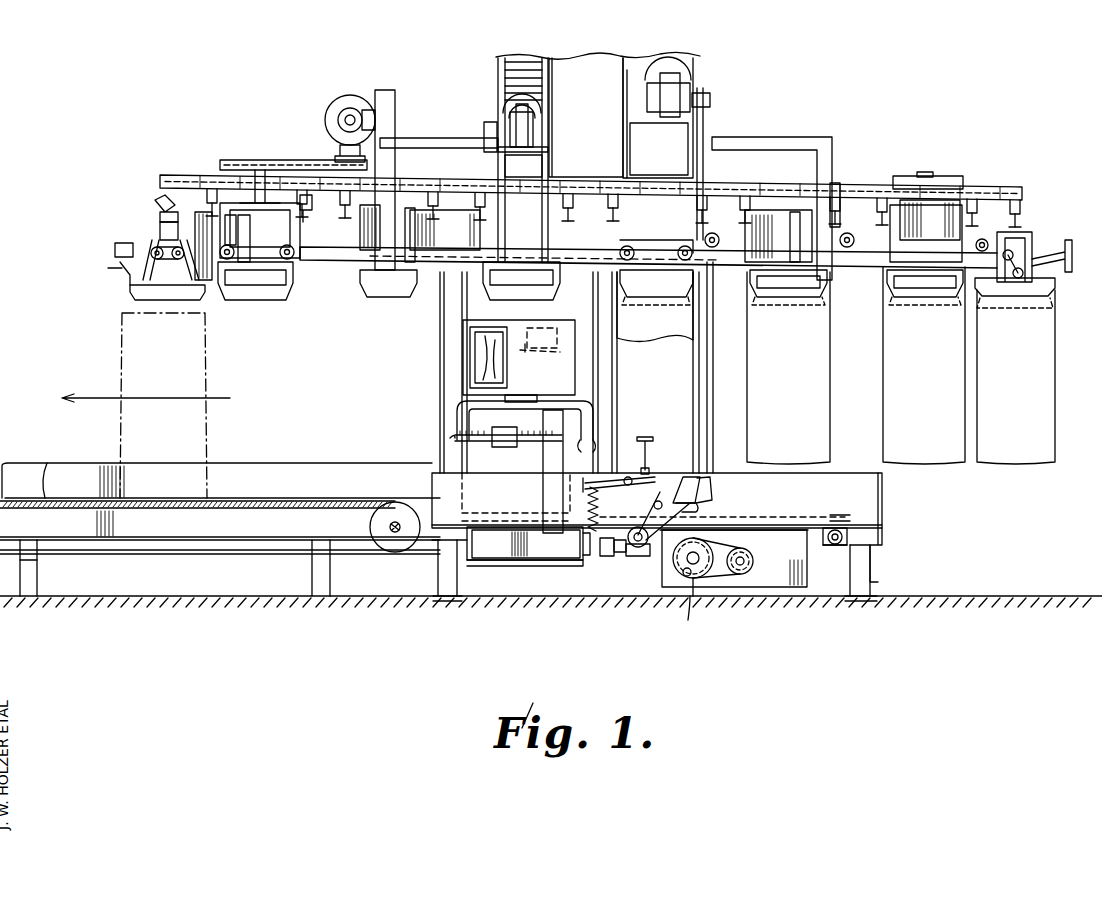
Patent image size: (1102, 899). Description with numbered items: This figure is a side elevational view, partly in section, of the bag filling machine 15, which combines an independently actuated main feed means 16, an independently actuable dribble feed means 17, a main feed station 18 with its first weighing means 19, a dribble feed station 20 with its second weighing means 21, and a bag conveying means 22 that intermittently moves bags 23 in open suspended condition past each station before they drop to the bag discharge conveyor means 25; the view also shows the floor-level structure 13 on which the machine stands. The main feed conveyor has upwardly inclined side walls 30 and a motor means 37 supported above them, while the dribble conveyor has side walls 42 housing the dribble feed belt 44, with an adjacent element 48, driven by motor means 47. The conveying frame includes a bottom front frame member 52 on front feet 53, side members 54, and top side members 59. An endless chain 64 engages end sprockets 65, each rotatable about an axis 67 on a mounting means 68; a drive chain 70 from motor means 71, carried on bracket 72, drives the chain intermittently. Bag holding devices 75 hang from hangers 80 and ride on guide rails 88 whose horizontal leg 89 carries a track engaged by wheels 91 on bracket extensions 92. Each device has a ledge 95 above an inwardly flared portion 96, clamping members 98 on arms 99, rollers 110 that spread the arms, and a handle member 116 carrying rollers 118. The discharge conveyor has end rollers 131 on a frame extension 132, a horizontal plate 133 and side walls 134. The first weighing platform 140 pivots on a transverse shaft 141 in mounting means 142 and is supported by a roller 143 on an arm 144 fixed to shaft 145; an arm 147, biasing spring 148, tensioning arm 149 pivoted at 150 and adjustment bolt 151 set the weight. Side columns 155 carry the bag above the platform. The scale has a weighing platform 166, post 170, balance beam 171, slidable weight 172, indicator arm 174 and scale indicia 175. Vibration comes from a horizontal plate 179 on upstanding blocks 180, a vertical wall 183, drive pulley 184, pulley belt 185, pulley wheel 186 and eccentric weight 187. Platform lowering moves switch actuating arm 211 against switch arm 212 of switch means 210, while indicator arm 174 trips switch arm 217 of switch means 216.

The conveyor 13 is at (150, 555).
The bag filling machine 15 is at (886, 110).
The main feed means 16 is at (701, 74).
The dribble feed means 17 is at (490, 72).
The main feed station 18 is at (729, 133).
The first weighing means 19 is at (639, 560).
The dribble feed station 20 is at (563, 170).
The second weighing means 21 is at (508, 562).
The bag conveying means 22 is at (1031, 180).
The bag 23 is at (207, 425).
The bag discharge conveyor means 25 is at (47, 463).
The side walls 30 is at (613, 95).
The motor means 37 is at (690, 84).
The side walls 42 is at (500, 95).
The dribble feed belt 44 is at (540, 68).
The motor means 47 is at (505, 112).
The plates 48 is at (540, 96).
The bottom front frame member 52 is at (862, 490).
The front feet 53 is at (455, 600).
The side members 54 is at (428, 492).
The top side members 59 is at (432, 138).
The endless chain 64 is at (722, 180).
The end sprockets 65 is at (870, 190).
The axis 67 is at (925, 172).
The mounting means 68 is at (905, 178).
The drive chain 70 is at (240, 160).
The motor means 71 is at (336, 112).
The bracket 72 is at (393, 100).
The bag holding device 75 is at (413, 200).
The hanger 80 is at (745, 186).
The guide rails 88 is at (436, 252).
The horizontal leg 89 is at (716, 264).
The wheels 91 is at (116, 250).
The bracket extensions 92 is at (242, 238).
The ledge 95 is at (192, 285).
The inwardly flared portion 96 is at (140, 292).
The clamping members 98 is at (120, 268).
The arms 99 is at (152, 240).
The rollers 110 is at (581, 267).
The handle member 116 is at (262, 203).
The rollers 118 is at (158, 204).
The end rollers 131 is at (388, 552).
The frame extension 132 is at (40, 577).
The horizontal plate 133 is at (225, 508).
The side walls 134 is at (265, 470).
The weighing platform 140 is at (768, 505).
The transverse shaft 141 is at (825, 549).
The mounting means 142 is at (822, 555).
The roller 143 is at (604, 558).
The arm 144 is at (618, 553).
The shaft 145 is at (642, 558).
The arm 147 is at (586, 553).
The biasing spring 148 is at (588, 511).
The tensioning arm 149 is at (585, 487).
The pivot 150 is at (628, 490).
The adjustment bolt 151 is at (647, 447).
The side columns 155 is at (692, 407).
The weighing platform 166 is at (525, 543).
The post 170 is at (552, 452).
The balance beam 171 is at (462, 440).
The slidable weight 172 is at (495, 450).
The indicator arm 174 is at (492, 362).
The scale indicia 175 is at (482, 352).
The horizontal plate 179 is at (760, 527).
The upstanding blocks 180 is at (808, 518).
The vertical wall 183 is at (790, 578).
The drive pulley 184 is at (745, 553).
The pulley belt 185 is at (752, 566).
The pulley wheel 186 is at (700, 582).
The eccentric weight 187 is at (690, 618).
The switch means 210 is at (712, 500).
The switch actuating arm 211 is at (684, 477).
The switch arm 212 is at (697, 512).
The switch means 216 is at (557, 338).
The switch arm 217 is at (560, 352).